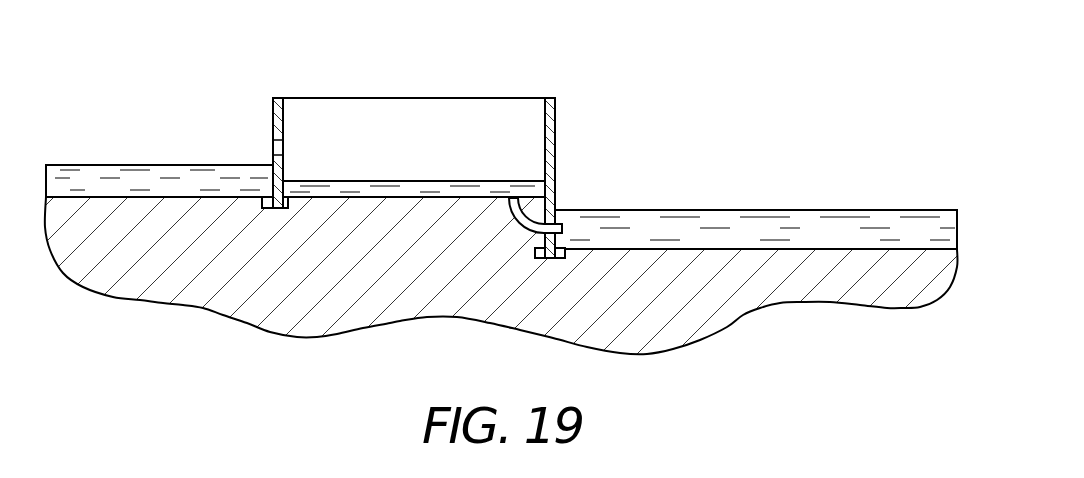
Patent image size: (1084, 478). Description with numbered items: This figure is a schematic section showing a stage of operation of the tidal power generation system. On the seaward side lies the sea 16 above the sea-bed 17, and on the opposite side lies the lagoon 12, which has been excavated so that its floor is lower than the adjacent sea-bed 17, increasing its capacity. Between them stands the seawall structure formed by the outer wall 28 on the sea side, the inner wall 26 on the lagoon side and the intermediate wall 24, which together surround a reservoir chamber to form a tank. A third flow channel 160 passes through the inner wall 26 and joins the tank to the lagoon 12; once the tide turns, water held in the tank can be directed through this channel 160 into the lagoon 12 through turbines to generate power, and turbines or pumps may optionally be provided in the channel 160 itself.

The lagoon 12 is at (775, 210).
The sea 16 is at (158, 165).
The sea-bed 17 is at (80, 196).
The intermediate wall 24 is at (416, 149).
The inner wall 26 is at (557, 113).
The outer wall 28 is at (273, 113).
The third flow channel 160 is at (530, 231).